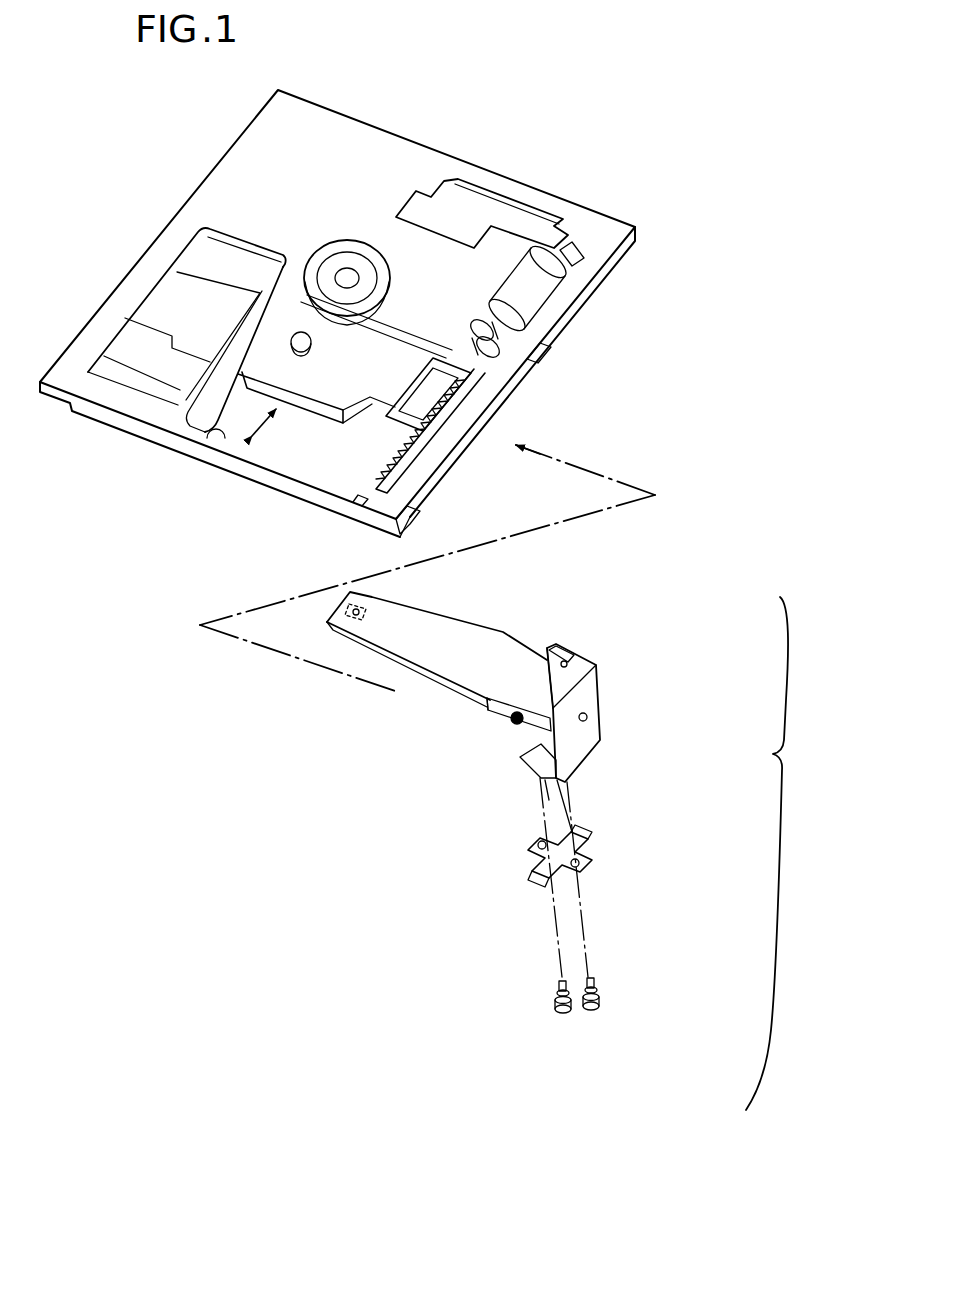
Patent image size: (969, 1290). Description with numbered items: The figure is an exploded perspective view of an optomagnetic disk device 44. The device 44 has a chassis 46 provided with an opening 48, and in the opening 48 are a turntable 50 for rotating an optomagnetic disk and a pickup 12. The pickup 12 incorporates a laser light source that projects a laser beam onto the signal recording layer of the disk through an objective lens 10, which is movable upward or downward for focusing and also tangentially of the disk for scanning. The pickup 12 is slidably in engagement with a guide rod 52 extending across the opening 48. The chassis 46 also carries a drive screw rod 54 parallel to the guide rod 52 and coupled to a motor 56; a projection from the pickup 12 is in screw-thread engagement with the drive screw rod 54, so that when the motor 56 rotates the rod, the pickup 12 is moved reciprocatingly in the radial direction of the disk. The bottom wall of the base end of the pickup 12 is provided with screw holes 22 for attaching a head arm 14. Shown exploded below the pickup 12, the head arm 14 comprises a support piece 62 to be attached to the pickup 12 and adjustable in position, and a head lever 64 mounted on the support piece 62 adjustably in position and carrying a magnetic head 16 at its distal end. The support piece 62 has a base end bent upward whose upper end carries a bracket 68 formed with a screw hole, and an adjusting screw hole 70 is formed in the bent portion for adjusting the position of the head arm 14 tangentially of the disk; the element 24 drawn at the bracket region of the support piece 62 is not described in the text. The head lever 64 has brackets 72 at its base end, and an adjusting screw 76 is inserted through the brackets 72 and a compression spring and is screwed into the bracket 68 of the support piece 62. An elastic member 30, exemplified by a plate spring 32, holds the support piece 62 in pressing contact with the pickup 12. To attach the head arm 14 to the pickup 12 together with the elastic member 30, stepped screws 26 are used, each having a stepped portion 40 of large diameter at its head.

The objective lens 10 is at (298, 334).
The pickup 12 is at (182, 307).
The head arm 14 is at (795, 853).
The magnetic head 16 is at (377, 597).
The screw holes 22 is at (417, 403).
The bracket 24 is at (623, 691).
The stepped screws 26 is at (568, 1028).
The elastic member 30 is at (645, 856).
The plate spring 32 is at (587, 838).
The stepped portion 40 is at (556, 1002).
The device 44 is at (684, 186).
The chassis 46 is at (366, 137).
The opening 48 is at (225, 436).
The turntable 50 is at (348, 270).
The guide rod 52 is at (367, 467).
The drive screw rod 54 is at (383, 400).
The motor 56 is at (553, 327).
The support piece 62 is at (527, 748).
The head lever 64 is at (464, 645).
The bracket 68 is at (560, 652).
The adjusting screw hole 70 is at (587, 717).
The brackets 72 is at (492, 718).
The adjusting screw 76 is at (507, 727).